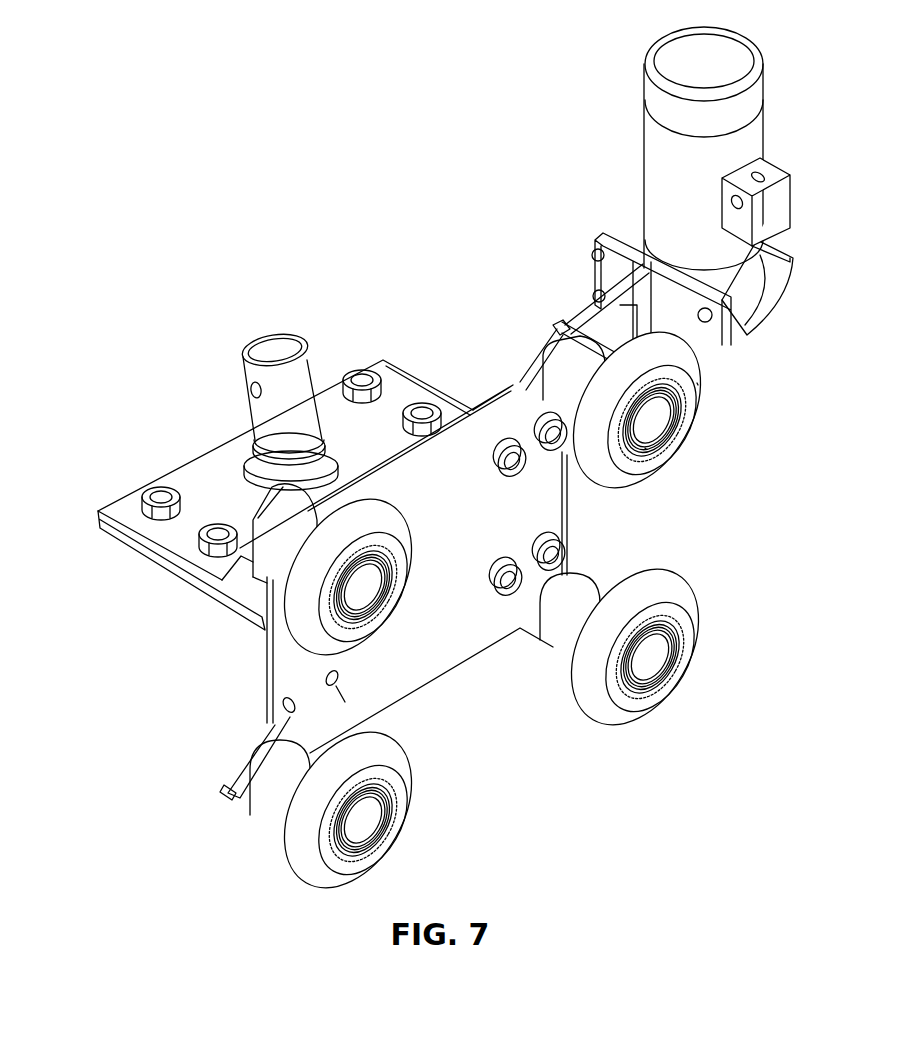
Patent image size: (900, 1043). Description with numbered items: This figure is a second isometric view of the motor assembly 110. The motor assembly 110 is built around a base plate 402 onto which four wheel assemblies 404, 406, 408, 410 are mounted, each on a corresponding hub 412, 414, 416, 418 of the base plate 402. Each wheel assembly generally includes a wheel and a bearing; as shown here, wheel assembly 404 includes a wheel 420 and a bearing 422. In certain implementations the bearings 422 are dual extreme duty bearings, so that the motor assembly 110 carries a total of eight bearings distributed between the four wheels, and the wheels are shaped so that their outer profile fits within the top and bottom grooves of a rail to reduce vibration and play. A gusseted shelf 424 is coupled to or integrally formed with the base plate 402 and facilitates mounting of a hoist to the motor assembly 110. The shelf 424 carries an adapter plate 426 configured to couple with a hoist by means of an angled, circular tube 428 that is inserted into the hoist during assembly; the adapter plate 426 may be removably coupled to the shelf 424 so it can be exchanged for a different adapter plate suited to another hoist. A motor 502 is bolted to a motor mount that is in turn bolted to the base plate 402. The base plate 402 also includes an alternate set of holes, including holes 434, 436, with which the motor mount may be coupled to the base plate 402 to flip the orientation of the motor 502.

The motor assembly 110 is at (852, 190).
The base plate 402 is at (432, 632).
The wheel assembly 404 is at (662, 428).
The wheel assembly 406 is at (350, 607).
The wheel assembly 408 is at (663, 650).
The wheel assembly 410 is at (365, 816).
The hub 412 is at (560, 334).
The hub 414 is at (247, 558).
The hub 416 is at (556, 640).
The hub 418 is at (245, 790).
The wheel 420 is at (698, 382).
The bearing 422 is at (645, 448).
The gusseted shelf 424 is at (121, 550).
The adapter plate 426 is at (226, 489).
The angled circular tube 428 is at (300, 368).
The hole 434 is at (280, 718).
The hole 436 is at (334, 690).
The motor 502 is at (675, 152).